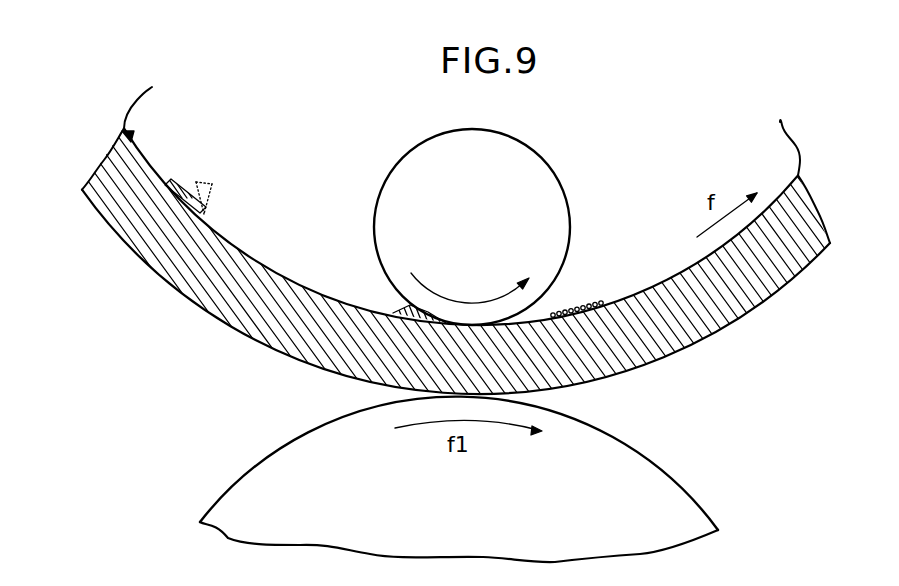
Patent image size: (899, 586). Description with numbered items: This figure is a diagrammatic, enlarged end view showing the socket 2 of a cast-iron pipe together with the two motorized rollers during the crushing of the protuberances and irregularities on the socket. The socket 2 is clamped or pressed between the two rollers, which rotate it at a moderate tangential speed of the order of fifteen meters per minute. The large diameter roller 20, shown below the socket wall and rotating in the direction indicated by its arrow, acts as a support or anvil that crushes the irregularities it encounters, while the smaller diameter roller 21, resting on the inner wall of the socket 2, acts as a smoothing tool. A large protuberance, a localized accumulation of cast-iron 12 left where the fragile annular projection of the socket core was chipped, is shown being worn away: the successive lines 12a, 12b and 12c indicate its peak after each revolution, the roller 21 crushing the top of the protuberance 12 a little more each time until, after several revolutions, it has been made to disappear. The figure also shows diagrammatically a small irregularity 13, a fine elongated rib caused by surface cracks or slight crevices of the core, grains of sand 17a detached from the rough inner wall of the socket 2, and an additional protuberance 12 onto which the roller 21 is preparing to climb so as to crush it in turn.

The socket 2 is at (715, 318).
The protuberance 12 is at (400, 305).
The successive peak line 12a is at (209, 190).
The successive peak line 12b is at (205, 188).
The successive peak line 12c is at (190, 185).
The elongated rib 13 is at (133, 134).
The grains of sand 17a is at (578, 303).
The roller 20 is at (663, 492).
The roller 21 is at (548, 197).